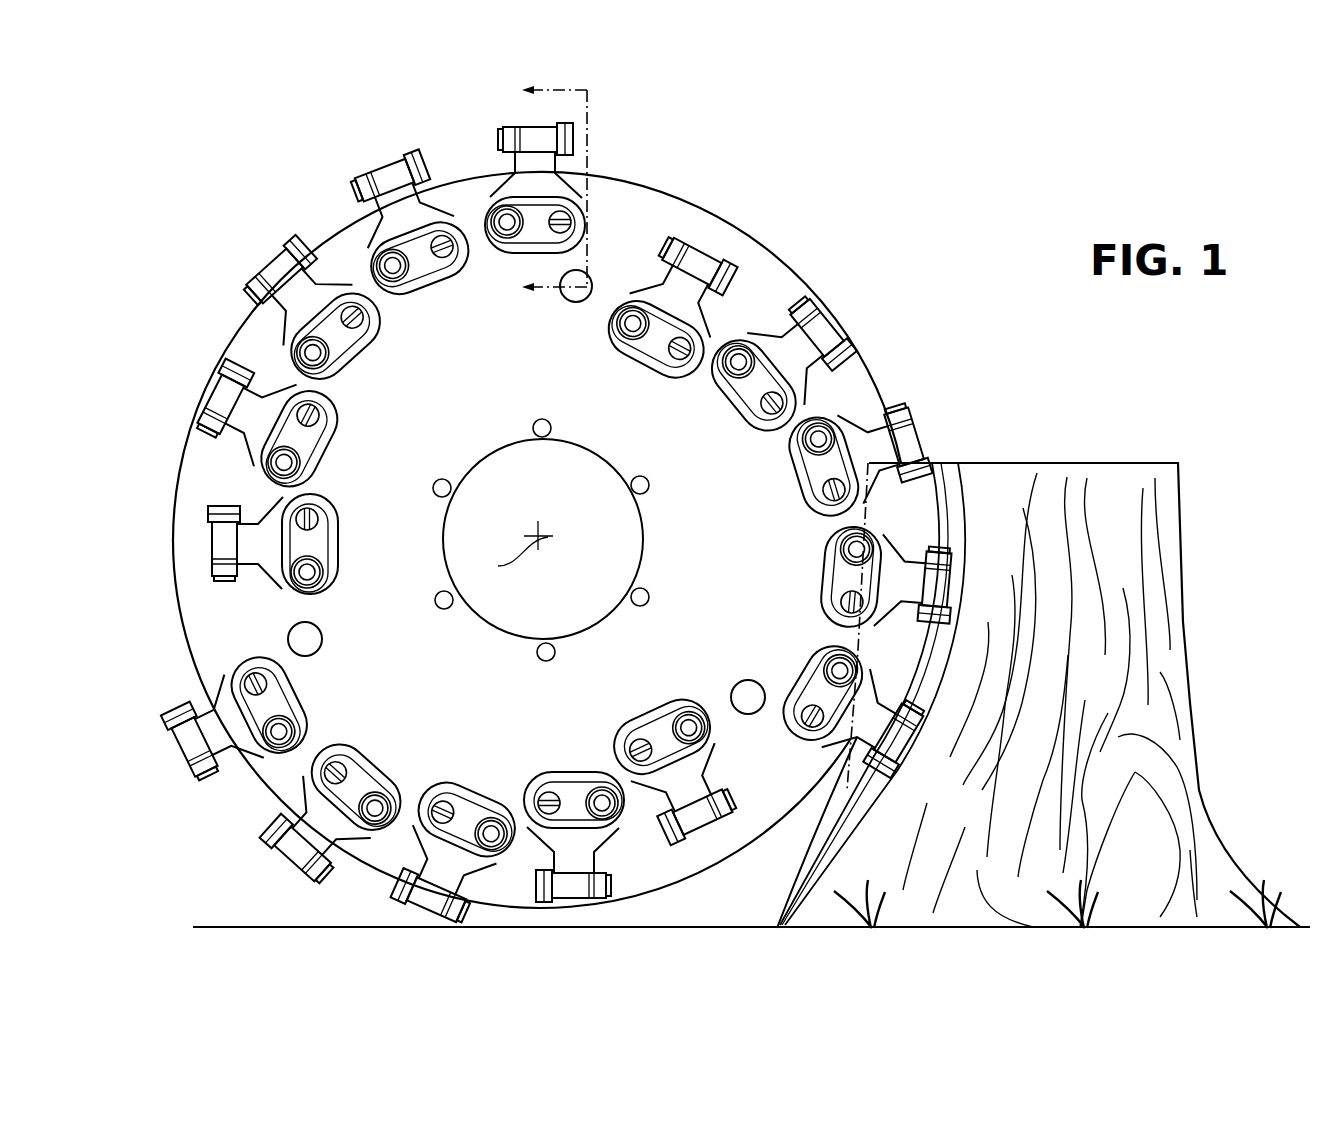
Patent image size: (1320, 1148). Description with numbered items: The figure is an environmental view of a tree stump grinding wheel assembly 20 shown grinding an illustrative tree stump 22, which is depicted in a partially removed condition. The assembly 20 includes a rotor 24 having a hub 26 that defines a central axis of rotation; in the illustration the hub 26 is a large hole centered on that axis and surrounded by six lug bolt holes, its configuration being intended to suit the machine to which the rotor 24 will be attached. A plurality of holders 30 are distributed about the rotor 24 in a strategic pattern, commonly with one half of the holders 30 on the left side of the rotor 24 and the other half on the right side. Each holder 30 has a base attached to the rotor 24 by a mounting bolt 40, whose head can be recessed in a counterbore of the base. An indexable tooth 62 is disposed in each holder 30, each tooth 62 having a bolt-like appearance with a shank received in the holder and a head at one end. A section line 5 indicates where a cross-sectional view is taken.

The tree stump grinding wheel assembly 20 is at (868, 260).
The tree stump 22 is at (1127, 541).
The rotor 24 is at (173, 589).
The hub 26 is at (485, 460).
The holder 30 is at (429, 293).
The mounting bolt 40 is at (566, 216).
The indexable tooth 62 is at (579, 136).
The section line 5- 5 is at (547, 185).